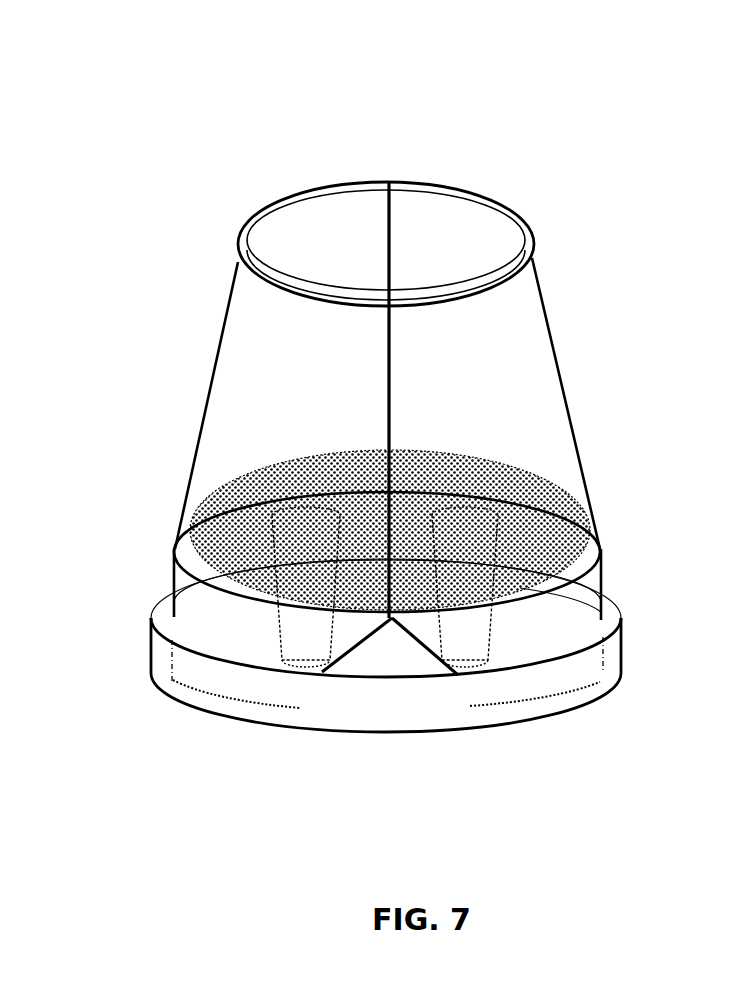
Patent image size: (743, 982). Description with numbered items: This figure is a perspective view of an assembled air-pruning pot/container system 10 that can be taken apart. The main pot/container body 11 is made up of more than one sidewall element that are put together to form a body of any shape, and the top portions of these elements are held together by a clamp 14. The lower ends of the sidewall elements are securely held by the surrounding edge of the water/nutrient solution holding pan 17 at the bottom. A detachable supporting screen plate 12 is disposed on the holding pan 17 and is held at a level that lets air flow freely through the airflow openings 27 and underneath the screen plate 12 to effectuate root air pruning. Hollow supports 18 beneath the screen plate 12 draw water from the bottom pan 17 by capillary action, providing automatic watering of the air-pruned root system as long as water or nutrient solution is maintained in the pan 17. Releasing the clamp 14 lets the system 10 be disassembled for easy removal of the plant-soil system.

The air-pruning pot/container system 10 is at (242, 150).
The pot/container body 11 is at (556, 342).
The supporting screen plate 12 is at (562, 538).
The clamp 14 is at (527, 248).
The water/nutrient solution holding pan 17 is at (433, 708).
The hollow supports 18 is at (478, 630).
The airflow openings 27 is at (393, 662).